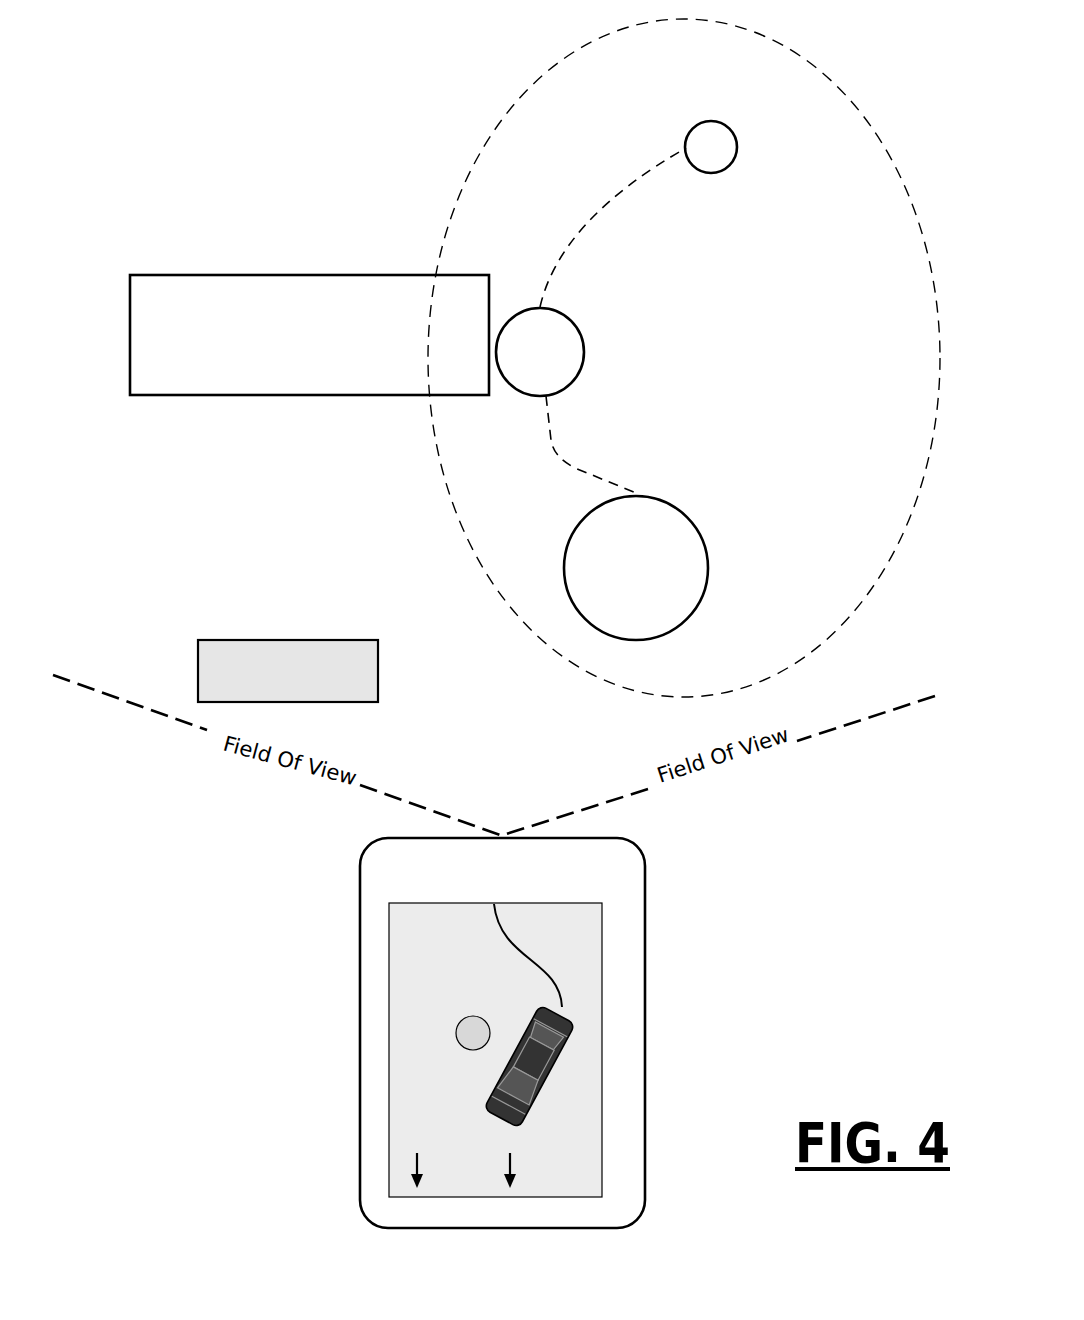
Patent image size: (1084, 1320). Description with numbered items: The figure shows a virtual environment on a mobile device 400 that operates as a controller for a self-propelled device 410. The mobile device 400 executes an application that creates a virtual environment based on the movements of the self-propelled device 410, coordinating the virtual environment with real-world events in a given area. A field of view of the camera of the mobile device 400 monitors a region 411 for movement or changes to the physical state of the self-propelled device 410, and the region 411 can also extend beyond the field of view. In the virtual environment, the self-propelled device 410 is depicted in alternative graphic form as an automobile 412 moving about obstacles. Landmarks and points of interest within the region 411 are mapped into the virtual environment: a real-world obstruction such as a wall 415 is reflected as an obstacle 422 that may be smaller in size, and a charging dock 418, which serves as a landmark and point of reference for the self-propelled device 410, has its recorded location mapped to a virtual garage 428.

The mobile device 400 is at (318, 866).
The self-propelled device 410 is at (653, 455).
The region 411 is at (692, 125).
The automobile 412 is at (550, 1042).
The wall 415 is at (309, 335).
The charging dock 418 is at (257, 640).
The obstacle 422 is at (457, 1037).
The virtual garage 428 is at (412, 1155).